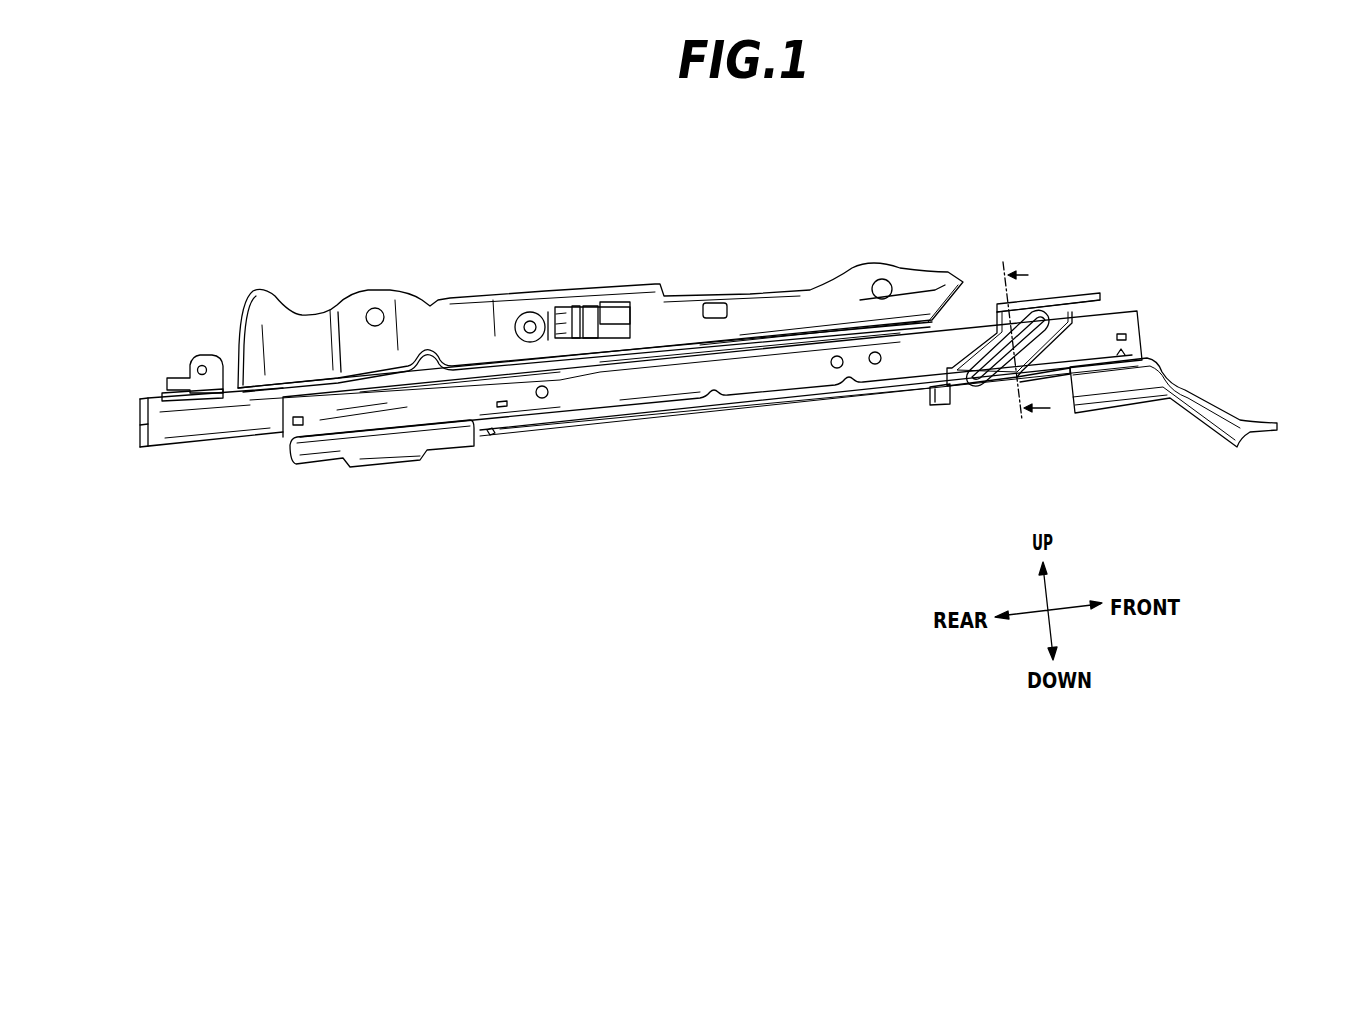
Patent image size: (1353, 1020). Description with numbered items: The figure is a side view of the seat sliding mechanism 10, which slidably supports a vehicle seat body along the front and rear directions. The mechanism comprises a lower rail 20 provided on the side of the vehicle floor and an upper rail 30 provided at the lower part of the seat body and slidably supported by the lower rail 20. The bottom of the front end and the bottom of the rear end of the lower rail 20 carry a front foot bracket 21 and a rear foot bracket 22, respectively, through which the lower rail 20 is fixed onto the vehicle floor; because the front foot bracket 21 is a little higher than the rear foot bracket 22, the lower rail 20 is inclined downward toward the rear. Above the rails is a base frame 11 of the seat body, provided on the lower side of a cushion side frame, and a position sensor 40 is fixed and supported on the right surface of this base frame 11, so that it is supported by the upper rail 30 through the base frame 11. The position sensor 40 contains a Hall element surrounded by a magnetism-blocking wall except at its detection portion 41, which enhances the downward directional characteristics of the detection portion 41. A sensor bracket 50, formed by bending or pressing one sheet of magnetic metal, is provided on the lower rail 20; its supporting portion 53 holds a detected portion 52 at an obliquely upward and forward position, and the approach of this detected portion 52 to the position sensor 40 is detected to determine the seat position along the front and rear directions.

The seat sliding mechanism 10 is at (947, 153).
The base frame 11 is at (748, 295).
The lower rail 20 is at (790, 397).
The front foot bracket 21 is at (1197, 422).
The rear foot bracket 22 is at (395, 466).
The upper rail 30 is at (233, 438).
The position sensor 40 is at (552, 312).
The detection portion 41 is at (590, 343).
The sensor bracket 50 is at (1162, 217).
The detected portion 52 is at (1098, 294).
The supporting portion 53 is at (1053, 347).